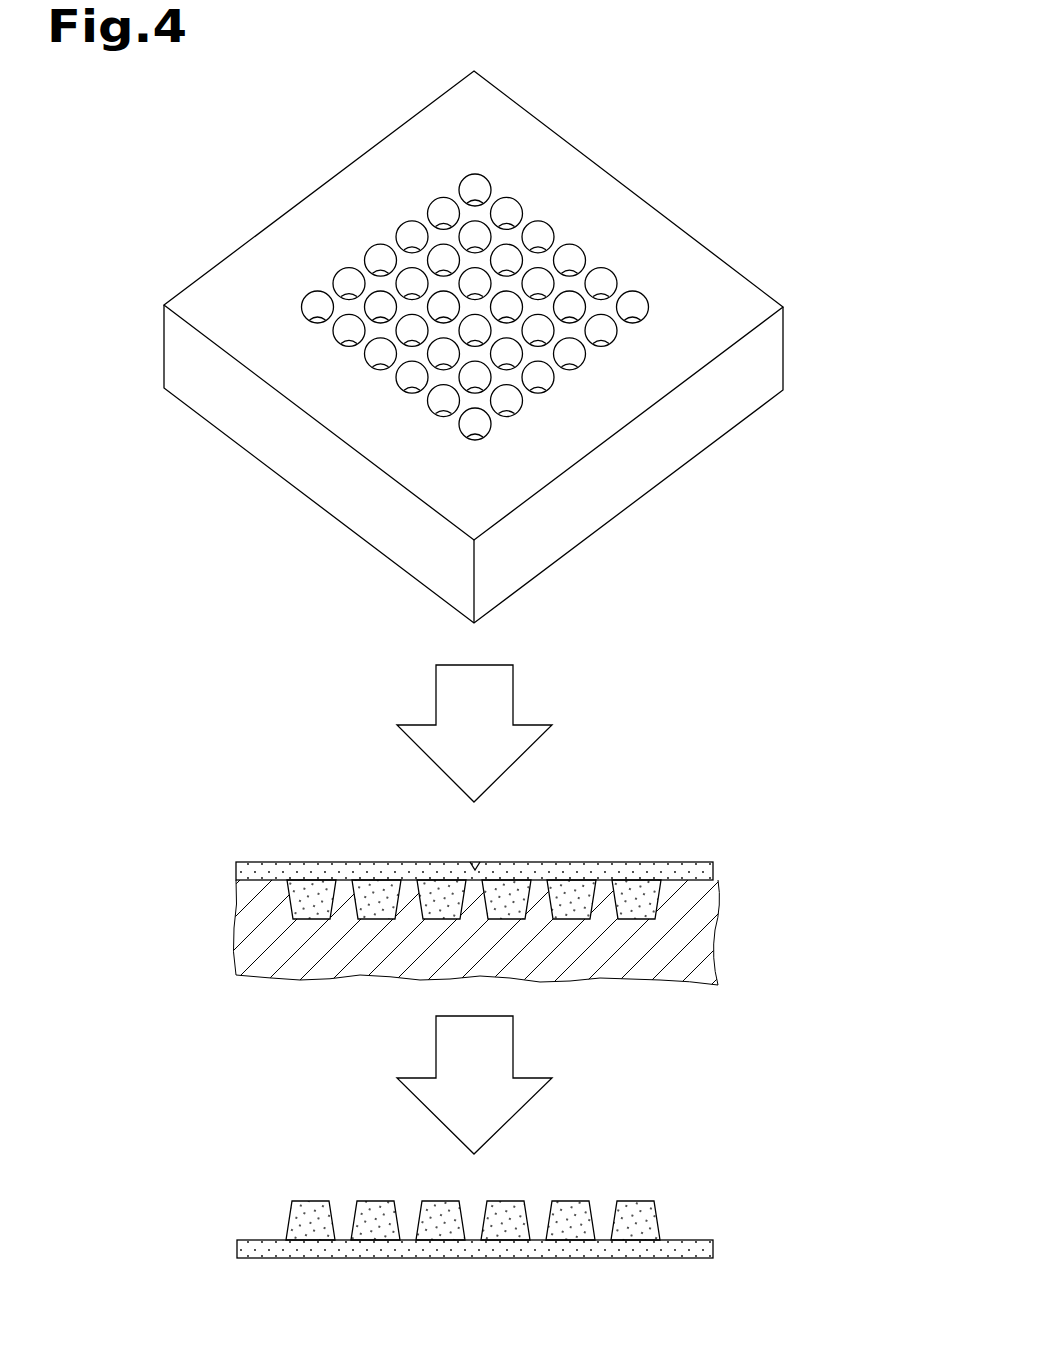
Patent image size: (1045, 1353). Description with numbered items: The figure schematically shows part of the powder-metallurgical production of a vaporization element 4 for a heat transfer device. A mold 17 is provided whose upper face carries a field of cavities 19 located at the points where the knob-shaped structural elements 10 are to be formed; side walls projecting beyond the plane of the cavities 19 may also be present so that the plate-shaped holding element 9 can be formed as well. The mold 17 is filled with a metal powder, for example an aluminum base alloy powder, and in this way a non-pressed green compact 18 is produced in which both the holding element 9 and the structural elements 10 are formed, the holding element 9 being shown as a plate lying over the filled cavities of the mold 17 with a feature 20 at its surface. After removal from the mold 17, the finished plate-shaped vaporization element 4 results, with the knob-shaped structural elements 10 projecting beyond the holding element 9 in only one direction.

The vaporization element 4 is at (751, 1231).
The holding element 9 is at (539, 816).
The knob-shaped structural elements 10 is at (287, 914).
The mold 17 is at (815, 295).
The green compact 18 is at (728, 866).
The cavities 19 is at (479, 166).
The notch in film surface 20 is at (488, 848).